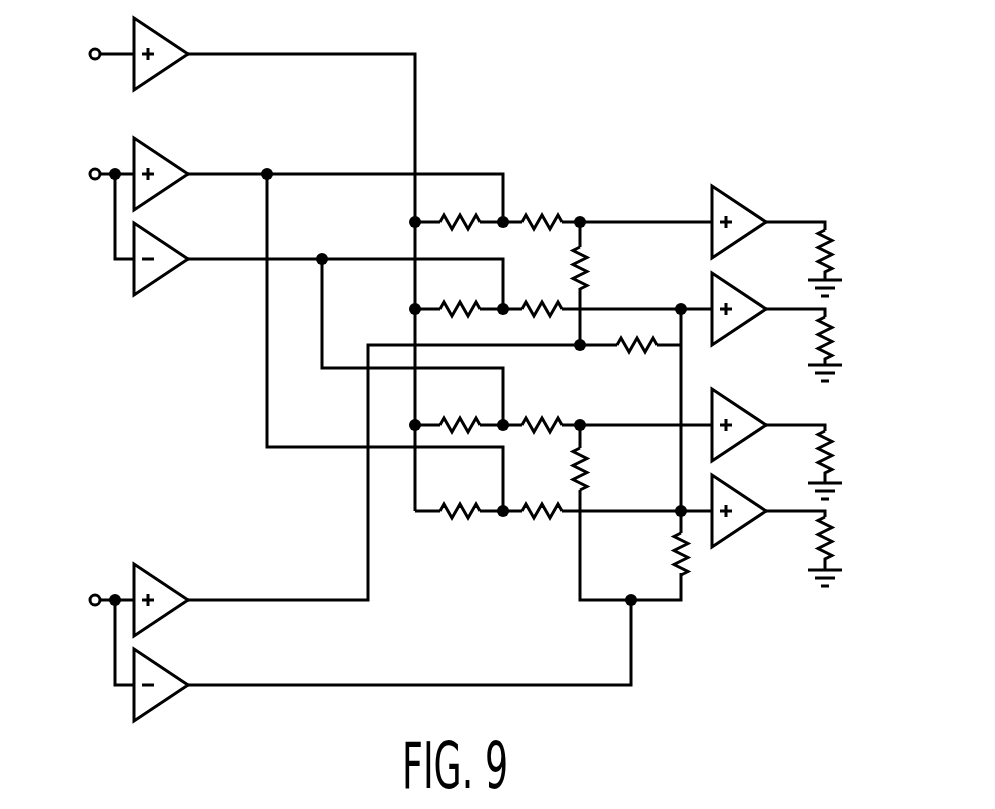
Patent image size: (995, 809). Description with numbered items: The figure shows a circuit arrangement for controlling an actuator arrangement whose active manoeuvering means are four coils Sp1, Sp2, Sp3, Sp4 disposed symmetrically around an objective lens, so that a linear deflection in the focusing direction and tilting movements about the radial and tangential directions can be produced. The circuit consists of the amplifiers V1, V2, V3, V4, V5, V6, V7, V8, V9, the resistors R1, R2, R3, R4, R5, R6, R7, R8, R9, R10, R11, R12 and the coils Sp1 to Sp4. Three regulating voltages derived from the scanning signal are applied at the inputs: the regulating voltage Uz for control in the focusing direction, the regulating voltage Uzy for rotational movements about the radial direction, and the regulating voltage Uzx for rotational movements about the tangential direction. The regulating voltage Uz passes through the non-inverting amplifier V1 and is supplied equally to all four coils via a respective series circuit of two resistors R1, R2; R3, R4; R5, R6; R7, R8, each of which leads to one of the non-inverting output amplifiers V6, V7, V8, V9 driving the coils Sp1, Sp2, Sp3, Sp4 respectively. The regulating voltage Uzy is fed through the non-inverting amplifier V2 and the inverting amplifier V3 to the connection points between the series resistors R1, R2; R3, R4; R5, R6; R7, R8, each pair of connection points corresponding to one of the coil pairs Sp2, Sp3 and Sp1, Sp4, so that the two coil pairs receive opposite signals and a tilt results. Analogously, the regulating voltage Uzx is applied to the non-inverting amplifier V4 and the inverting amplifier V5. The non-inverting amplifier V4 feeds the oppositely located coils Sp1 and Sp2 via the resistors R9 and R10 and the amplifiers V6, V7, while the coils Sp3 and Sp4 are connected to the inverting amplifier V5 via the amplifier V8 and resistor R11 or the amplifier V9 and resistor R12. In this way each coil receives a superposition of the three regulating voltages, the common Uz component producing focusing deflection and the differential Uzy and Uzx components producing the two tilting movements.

The regulating voltage Uz is at (78, 54).
The regulating voltage Uzy is at (74, 176).
The regulating voltage Uzx is at (73, 602).
The non-inverting amplifier V1 is at (163, 47).
The non-inverting amplifier V2 is at (163, 163).
The inverting amplifier V3 is at (163, 253).
The non-inverting amplifier V4 is at (163, 591).
The inverting amplifier V5 is at (163, 678).
The non-inverting amplifier V6 is at (741, 212).
The non-inverting amplifier V7 is at (741, 300).
The non-inverting amplifier V8 is at (741, 416).
The non-inverting amplifier V9 is at (741, 506).
The resistor R1 is at (460, 205).
The resistor R2 is at (542, 205).
The resistor R3 is at (460, 291).
The resistor R4 is at (542, 291).
The resistor R5 is at (460, 406).
The resistor R6 is at (542, 406).
The resistor R7 is at (460, 493).
The resistor R8 is at (542, 493).
The resistor R9 is at (599, 268).
The resistor R10 is at (637, 364).
The resistor R11 is at (604, 469).
The resistor R12 is at (658, 554).
The coil Sp1 is at (849, 263).
The coil Sp2 is at (849, 349).
The coil Sp3 is at (849, 465).
The coil Sp4 is at (849, 551).